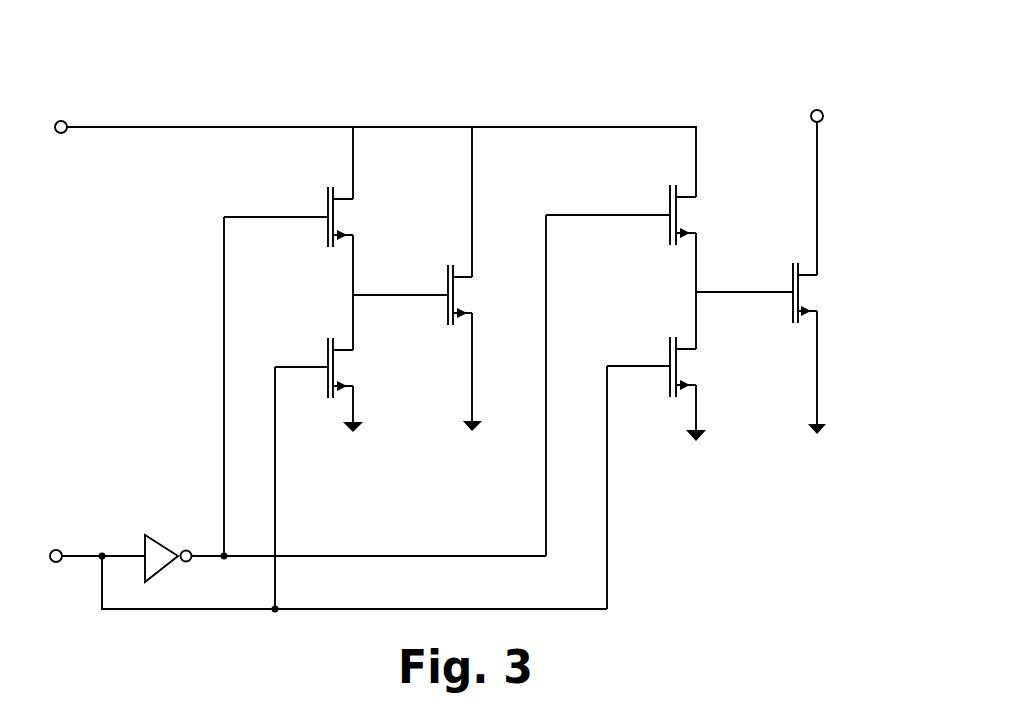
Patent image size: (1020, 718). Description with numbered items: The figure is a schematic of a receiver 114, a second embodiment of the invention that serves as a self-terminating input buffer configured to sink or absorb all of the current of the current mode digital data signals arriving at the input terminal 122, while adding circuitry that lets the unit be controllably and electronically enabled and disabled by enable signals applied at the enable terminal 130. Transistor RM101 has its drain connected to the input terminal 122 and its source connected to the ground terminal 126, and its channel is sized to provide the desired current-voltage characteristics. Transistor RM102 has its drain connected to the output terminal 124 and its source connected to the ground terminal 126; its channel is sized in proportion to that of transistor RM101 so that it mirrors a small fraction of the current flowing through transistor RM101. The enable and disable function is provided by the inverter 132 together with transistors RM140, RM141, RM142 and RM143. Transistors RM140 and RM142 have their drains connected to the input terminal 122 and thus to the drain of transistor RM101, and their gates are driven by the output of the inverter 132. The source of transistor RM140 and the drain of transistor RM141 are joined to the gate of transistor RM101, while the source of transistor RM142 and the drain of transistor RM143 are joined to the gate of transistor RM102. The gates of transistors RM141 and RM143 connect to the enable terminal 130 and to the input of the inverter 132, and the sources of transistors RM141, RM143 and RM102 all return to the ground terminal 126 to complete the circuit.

The receiver 114 is at (648, 62).
The input terminal 122 is at (63, 121).
The output terminal 124 is at (811, 113).
The ground terminal 126 is at (473, 428).
The enable terminal 130 is at (55, 565).
The inverter 132 is at (162, 545).
The transistor RM140 is at (326, 198).
The transistor RM141 is at (328, 392).
The transistor RM101 is at (447, 312).
The transistor RM142 is at (679, 215).
The transistor RM143 is at (679, 366).
The transistor RM102 is at (800, 293).